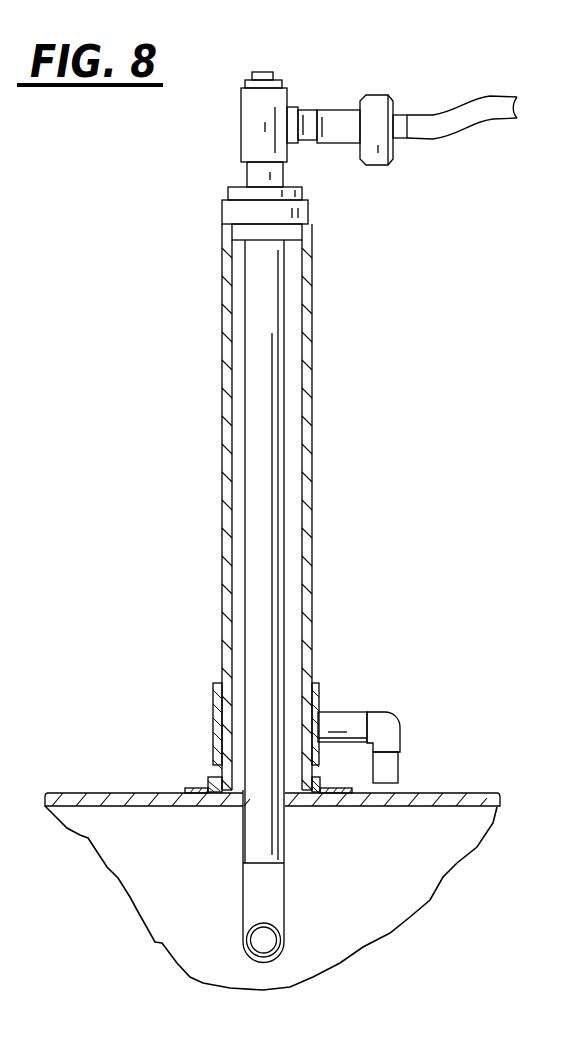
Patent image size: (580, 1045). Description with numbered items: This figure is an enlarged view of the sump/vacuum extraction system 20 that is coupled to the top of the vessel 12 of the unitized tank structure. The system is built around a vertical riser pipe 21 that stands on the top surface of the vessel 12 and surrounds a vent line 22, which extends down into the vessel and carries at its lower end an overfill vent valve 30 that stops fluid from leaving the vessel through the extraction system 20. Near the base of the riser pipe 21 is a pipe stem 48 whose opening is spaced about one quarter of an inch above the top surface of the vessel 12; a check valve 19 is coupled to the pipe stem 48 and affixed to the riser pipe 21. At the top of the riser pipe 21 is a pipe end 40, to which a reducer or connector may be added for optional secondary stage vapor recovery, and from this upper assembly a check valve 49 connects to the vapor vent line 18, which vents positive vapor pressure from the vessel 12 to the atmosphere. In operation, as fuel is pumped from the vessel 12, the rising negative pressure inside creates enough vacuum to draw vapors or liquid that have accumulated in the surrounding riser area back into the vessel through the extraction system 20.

The vessel 12 is at (418, 812).
The vapor vent line 18 is at (458, 125).
The check valve 19 is at (352, 718).
The sump/vacuum extraction system 20 is at (185, 430).
The riser pipe 21 is at (311, 467).
The vent line 22 is at (285, 570).
The overfill vent valve 30 is at (277, 903).
The pipe end 40 is at (267, 72).
The pipe stem 48 is at (397, 738).
The check valve 49 is at (340, 110).